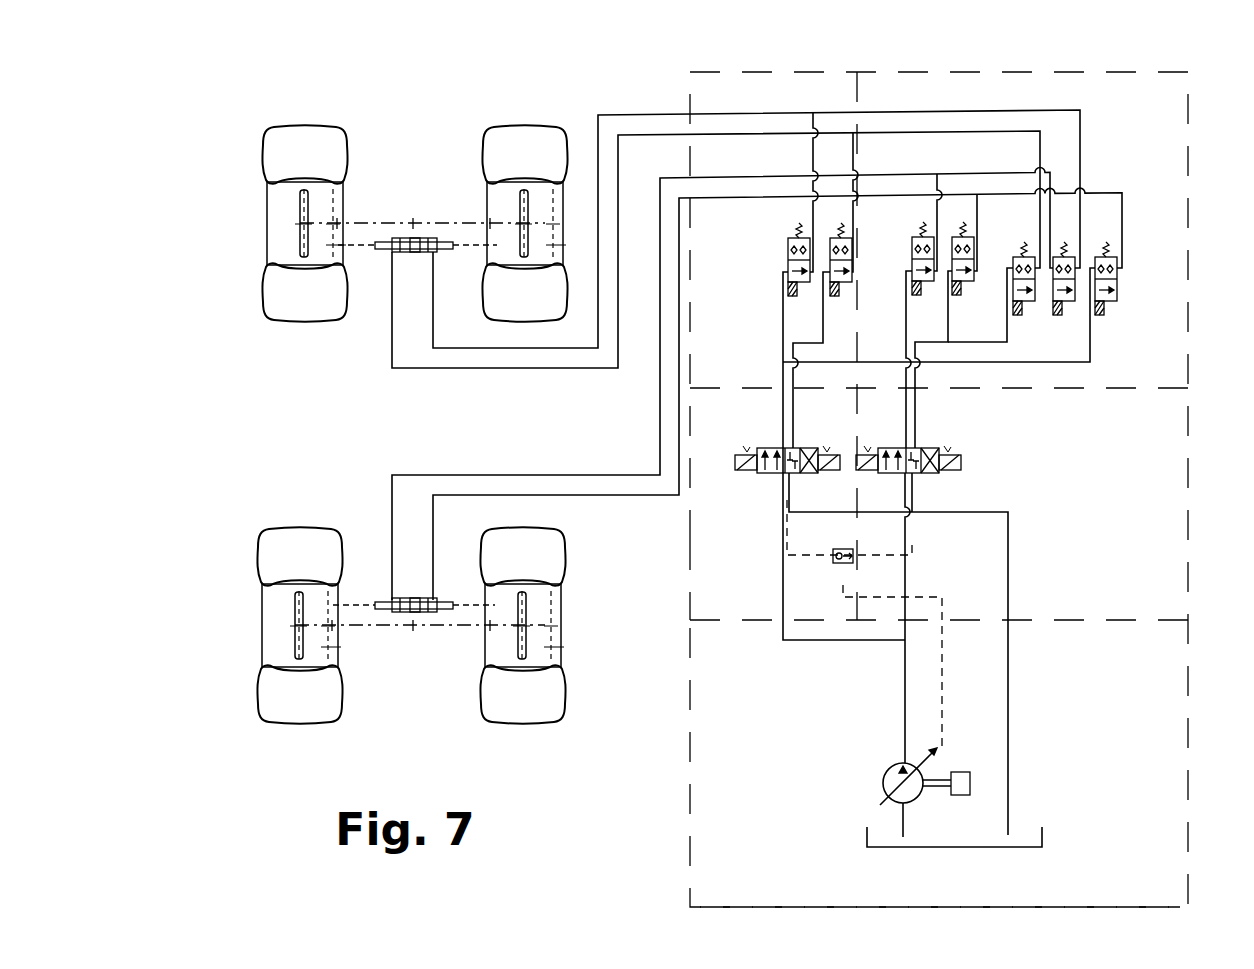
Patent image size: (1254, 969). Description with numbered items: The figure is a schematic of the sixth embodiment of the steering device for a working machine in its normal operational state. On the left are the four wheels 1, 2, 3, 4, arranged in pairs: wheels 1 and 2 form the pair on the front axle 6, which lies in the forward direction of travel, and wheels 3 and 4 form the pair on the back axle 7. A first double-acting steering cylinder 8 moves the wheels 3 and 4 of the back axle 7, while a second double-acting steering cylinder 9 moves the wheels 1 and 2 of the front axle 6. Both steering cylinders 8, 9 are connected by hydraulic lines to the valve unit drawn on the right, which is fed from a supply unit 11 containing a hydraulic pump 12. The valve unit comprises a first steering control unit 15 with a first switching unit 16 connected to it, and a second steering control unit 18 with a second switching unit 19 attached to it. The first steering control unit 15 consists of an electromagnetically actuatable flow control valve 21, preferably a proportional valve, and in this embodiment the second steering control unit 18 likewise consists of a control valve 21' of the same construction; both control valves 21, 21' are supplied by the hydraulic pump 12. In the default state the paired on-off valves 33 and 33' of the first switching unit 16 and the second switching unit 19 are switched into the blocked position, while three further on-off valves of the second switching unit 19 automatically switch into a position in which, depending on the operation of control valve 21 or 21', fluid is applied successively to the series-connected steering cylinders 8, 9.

The wheel 1 is at (262, 226).
The wheel 2 is at (483, 196).
The wheel 3 is at (264, 618).
The wheel 4 is at (487, 648).
The front axle 6 is at (373, 226).
The back axle 7 is at (377, 626).
The first double-acting steering cylinder 8 is at (421, 612).
The second double-acting steering cylinder 9 is at (427, 241).
The supply unit 11 is at (690, 790).
The hydraulic pump 12 is at (884, 773).
The first steering control unit 15 is at (690, 572).
The first switching unit 16 is at (688, 88).
The second steering control unit 18 is at (1190, 485).
The second switching unit 19 is at (1190, 150).
The flow control valve 21 is at (778, 481).
The control valve 21' is at (919, 434).
The on-off valves 33 is at (802, 253).
The on-off valves 33' is at (926, 249).